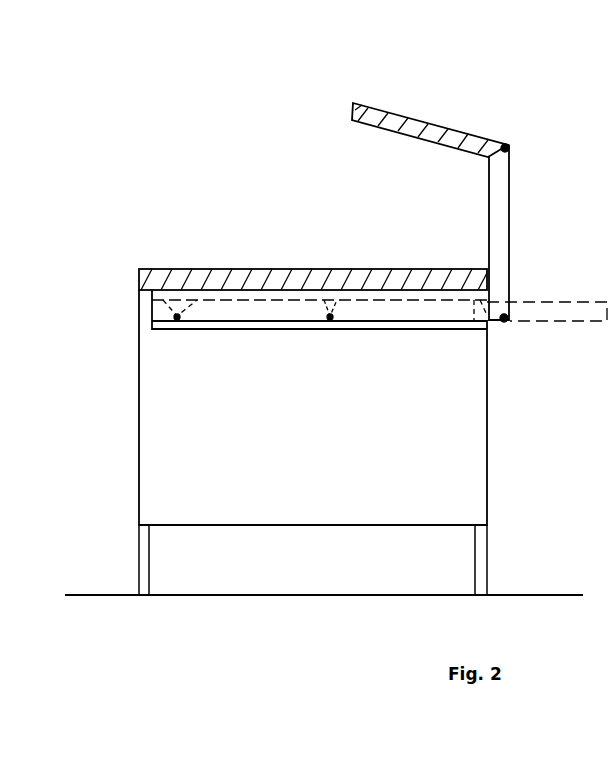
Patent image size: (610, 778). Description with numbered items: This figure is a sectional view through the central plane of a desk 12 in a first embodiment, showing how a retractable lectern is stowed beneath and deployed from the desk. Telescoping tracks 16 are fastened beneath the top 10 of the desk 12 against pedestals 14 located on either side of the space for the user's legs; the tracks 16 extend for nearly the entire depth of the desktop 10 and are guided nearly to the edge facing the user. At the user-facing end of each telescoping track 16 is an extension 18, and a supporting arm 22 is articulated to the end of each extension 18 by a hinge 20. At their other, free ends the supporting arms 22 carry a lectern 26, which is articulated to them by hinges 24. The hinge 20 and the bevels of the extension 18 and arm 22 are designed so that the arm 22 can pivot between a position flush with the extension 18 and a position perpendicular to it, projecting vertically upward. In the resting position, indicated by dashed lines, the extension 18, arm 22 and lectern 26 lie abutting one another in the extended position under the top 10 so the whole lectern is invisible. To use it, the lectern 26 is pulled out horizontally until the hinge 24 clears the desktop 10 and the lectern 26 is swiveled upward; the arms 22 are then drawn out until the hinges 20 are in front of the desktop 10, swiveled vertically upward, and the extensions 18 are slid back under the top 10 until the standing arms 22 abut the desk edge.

The top 10 is at (223, 284).
The desk 12 is at (518, 442).
The pedestals 14 is at (323, 456).
The telescoping tracks 16 is at (248, 330).
The extension 18 is at (474, 331).
The hinge 20 is at (505, 317).
The supporting arm 22 is at (500, 215).
The hinge 24 is at (508, 145).
The lectern 26 is at (440, 135).